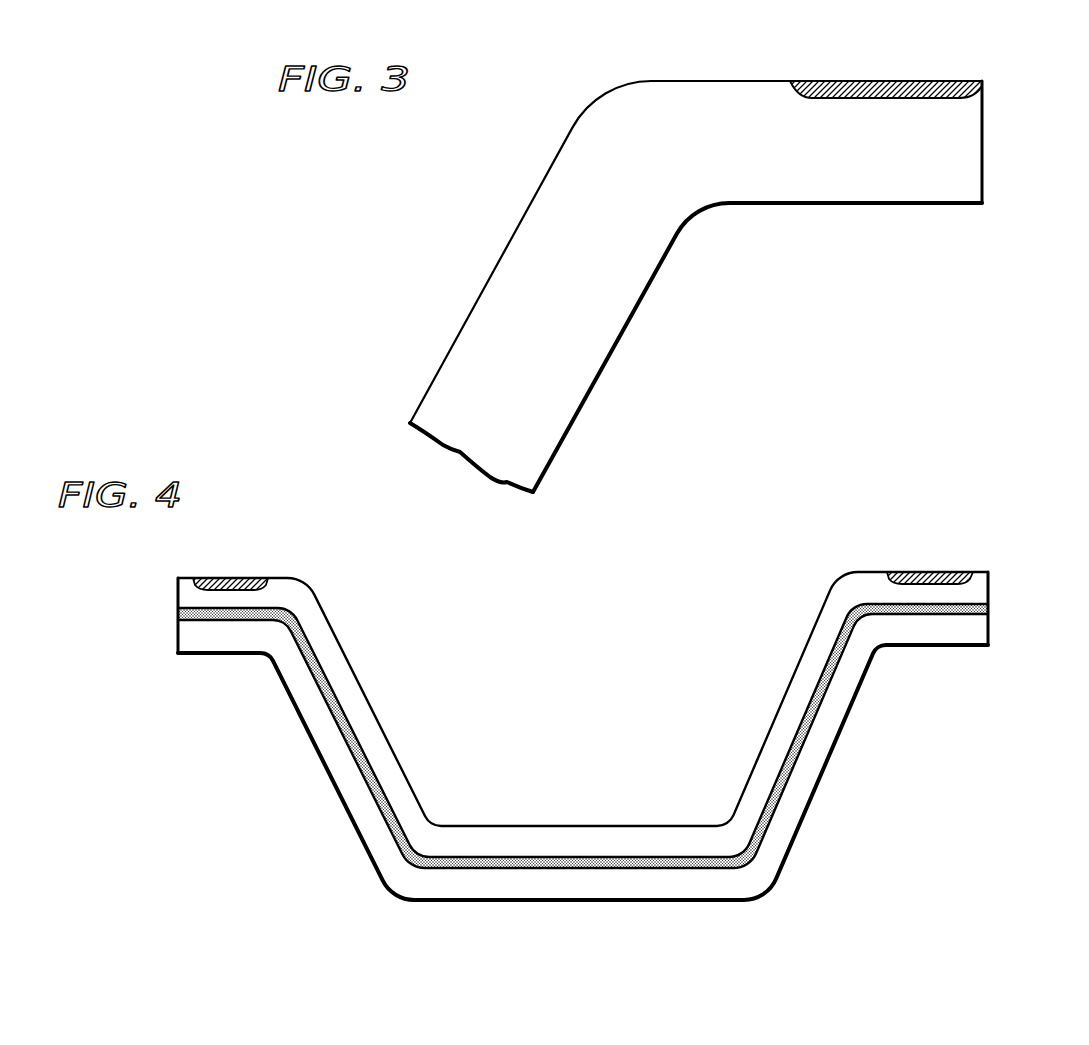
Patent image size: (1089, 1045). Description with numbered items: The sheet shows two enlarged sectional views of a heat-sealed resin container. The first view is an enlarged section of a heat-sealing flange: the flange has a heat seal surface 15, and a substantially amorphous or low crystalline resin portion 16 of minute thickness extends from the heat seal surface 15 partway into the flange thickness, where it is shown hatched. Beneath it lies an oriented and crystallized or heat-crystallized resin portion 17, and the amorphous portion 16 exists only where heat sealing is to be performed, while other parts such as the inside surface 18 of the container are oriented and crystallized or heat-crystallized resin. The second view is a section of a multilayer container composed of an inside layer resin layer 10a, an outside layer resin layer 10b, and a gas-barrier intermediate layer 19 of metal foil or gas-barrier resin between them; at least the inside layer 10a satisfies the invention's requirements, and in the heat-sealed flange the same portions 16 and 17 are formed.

In FIG. 3, the heat seal surface 15 is at (926, 80).
In FIG. 3, the substantially amorphous or low crystalline resin portion 16 is at (957, 88).
In FIG. 4, the substantially amorphous or low crystalline resin portion 16 is at (228, 580).
In FIG. 3, the oriented and crystallized or heat-crystallized resin portion 17 is at (946, 163).
In FIG. 4, the oriented and crystallized or heat-crystallized resin portion 17 is at (207, 600).
In FIG. 3, the inside surface 18 is at (472, 303).
In FIG. 4, the inside layer resin layer 10a is at (973, 593).
In FIG. 4, the outside layer resin layer 10b is at (968, 631).
In FIG. 4, the gas-barrier intermediate layer 19 is at (985, 609).